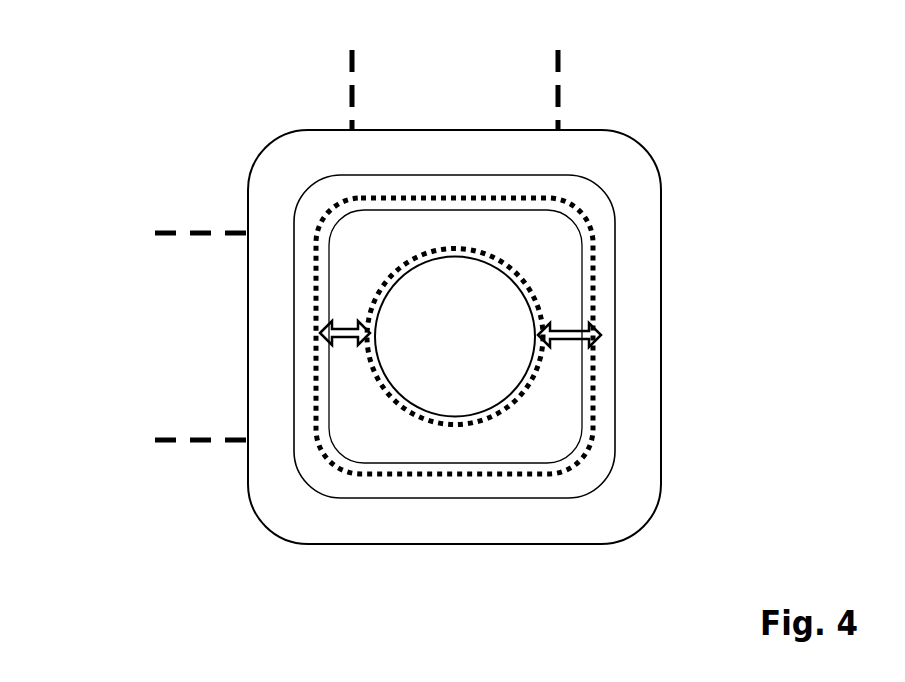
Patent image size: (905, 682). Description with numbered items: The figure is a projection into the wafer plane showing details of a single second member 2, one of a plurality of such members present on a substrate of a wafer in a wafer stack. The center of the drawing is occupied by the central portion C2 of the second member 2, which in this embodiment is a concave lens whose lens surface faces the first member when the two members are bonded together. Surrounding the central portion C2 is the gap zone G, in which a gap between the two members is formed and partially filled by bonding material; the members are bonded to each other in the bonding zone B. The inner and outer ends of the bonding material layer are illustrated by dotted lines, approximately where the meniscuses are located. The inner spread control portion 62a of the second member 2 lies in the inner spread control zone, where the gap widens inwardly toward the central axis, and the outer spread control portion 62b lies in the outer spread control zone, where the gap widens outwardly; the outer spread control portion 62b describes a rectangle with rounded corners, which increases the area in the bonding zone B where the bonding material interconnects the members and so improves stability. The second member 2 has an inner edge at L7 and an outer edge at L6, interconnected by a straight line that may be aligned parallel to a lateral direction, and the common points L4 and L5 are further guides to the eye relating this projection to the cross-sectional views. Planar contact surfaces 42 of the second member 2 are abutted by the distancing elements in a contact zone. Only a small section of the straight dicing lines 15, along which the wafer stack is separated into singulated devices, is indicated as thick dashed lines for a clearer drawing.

The second member 2 is at (90, 87).
The dicing lines 15 is at (558, 98).
The contact surfaces 42 is at (505, 295).
The inner spread control portion 62a is at (443, 422).
The outer spread control portion 62b is at (348, 468).
The common point L4 is at (252, 171).
The common point L5 is at (306, 192).
The outer edge L6 is at (346, 217).
The inner edge L7 is at (403, 273).
The bonding zone B is at (345, 319).
The gap zone G is at (569, 321).
The central portion C2 is at (475, 375).